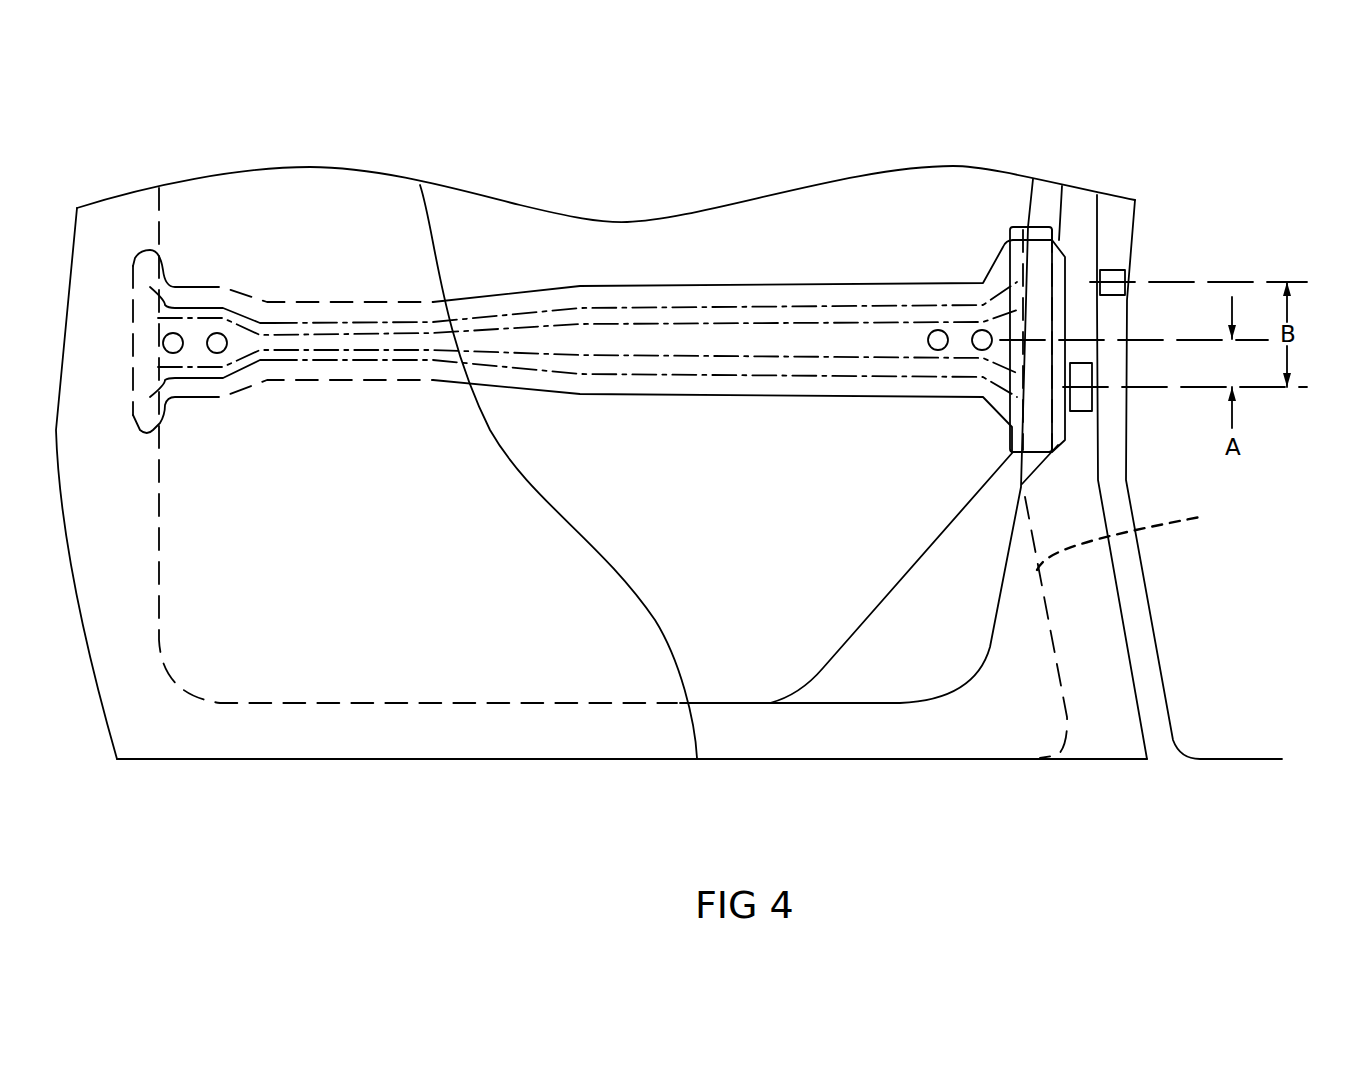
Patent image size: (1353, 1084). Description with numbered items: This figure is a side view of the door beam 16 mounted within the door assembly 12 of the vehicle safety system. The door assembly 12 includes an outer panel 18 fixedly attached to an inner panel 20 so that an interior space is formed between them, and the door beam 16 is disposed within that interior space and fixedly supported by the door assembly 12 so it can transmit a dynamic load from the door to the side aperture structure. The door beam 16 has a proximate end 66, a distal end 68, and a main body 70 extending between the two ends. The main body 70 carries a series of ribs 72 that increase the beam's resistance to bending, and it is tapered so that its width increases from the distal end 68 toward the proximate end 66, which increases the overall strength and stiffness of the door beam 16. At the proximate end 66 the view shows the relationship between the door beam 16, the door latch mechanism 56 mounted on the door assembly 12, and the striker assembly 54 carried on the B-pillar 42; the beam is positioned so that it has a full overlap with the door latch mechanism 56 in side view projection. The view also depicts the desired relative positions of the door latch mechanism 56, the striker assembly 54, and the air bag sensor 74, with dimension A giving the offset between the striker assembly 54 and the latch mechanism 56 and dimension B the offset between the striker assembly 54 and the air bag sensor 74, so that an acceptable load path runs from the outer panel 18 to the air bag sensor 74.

The door assembly 12 is at (1127, 630).
The door beam 16 is at (522, 275).
The outer panel 18 is at (255, 187).
The inner panel 20 is at (705, 223).
The B-pillar 42 is at (1137, 535).
The striker assembly 54 is at (1087, 392).
The door latch mechanism 56 is at (1043, 222).
The proximate end 66 is at (997, 410).
The distal end 68 is at (163, 418).
The main body 70 is at (733, 390).
The ribs 72 is at (788, 305).
The air bag sensor 74 is at (1118, 277).